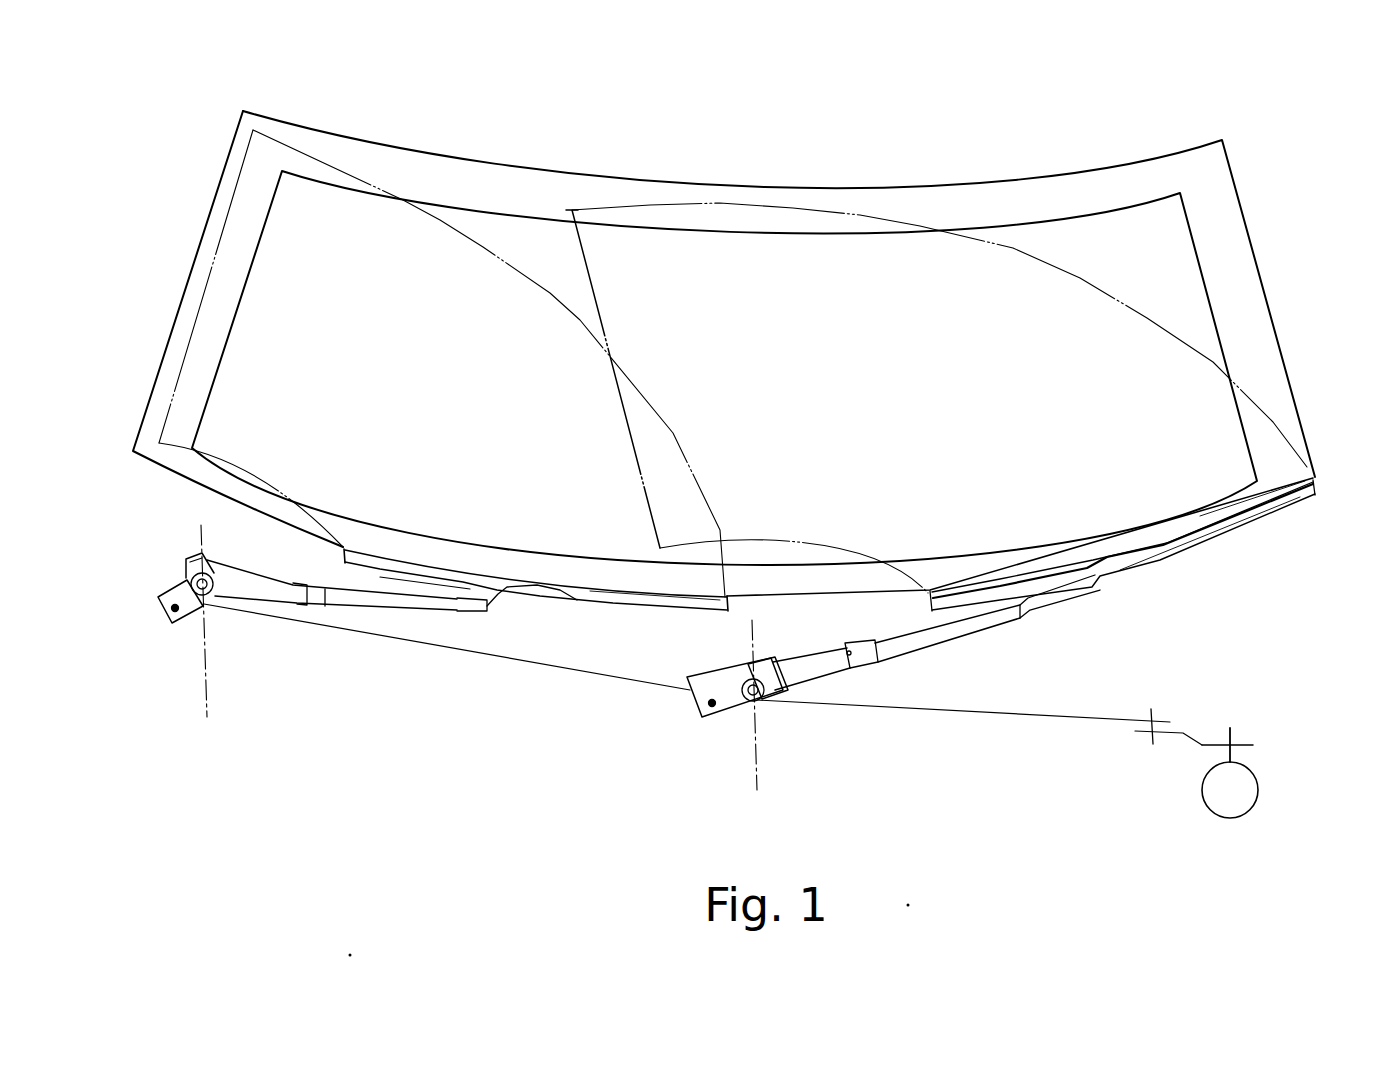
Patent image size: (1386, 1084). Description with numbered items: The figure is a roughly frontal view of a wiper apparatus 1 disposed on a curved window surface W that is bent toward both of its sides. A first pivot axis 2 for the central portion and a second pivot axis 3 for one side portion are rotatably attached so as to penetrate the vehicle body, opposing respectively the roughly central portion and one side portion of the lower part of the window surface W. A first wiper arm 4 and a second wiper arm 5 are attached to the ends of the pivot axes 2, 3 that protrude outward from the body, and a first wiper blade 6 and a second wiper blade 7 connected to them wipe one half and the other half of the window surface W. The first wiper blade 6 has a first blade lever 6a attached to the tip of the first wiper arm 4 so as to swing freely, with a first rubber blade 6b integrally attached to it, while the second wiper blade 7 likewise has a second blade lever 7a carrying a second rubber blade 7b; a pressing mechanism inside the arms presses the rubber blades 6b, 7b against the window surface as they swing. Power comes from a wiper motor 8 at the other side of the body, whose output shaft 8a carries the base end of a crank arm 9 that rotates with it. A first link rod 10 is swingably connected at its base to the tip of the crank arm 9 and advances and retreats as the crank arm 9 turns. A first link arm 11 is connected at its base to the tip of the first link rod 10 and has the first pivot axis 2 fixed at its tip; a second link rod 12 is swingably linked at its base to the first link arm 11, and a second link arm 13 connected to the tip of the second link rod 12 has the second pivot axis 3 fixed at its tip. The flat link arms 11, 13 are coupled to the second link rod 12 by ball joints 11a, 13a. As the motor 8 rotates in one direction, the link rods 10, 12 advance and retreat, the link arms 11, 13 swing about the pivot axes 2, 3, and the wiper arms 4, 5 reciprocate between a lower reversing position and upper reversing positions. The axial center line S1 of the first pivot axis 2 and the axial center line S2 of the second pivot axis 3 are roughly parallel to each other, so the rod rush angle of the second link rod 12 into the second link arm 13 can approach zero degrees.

The wiper apparatus 1 is at (965, 152).
The window surface W is at (1165, 268).
The first pivot axis 2 is at (762, 703).
The second pivot axis 3 is at (260, 649).
The first wiper arm 4 is at (950, 650).
The second wiper arm 5 is at (340, 620).
The first wiper blade 6 is at (1137, 494).
The first blade lever 6a is at (1258, 506).
The first rubber blade 6b is at (1277, 483).
The second wiper blade 7 is at (536, 637).
The second blade lever 7a is at (598, 608).
The second rubber blade 7b is at (683, 602).
The wiper motor 8 is at (1262, 786).
The output shaft 8a is at (1231, 730).
The crank arm 9 is at (1247, 742).
The first link rod 10 is at (995, 722).
The first link arm 11 is at (702, 717).
The ball joint 11a is at (705, 705).
The second link rod 12 is at (452, 650).
The second link arm 13 is at (183, 590).
The ball joint 13a is at (172, 627).
The axial center line of the first pivot axis S1 is at (776, 705).
The axial center line of the second pivot axis S2 is at (223, 627).